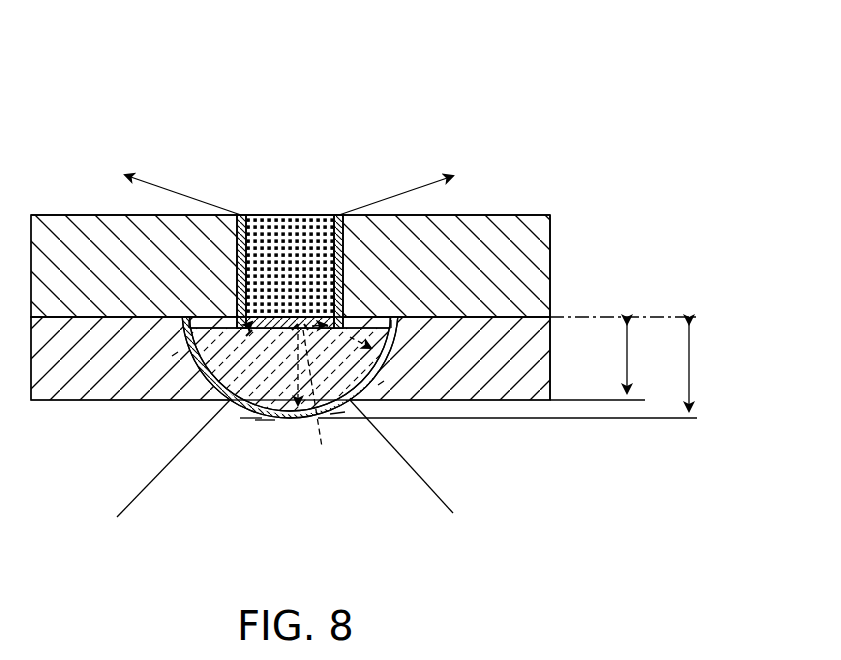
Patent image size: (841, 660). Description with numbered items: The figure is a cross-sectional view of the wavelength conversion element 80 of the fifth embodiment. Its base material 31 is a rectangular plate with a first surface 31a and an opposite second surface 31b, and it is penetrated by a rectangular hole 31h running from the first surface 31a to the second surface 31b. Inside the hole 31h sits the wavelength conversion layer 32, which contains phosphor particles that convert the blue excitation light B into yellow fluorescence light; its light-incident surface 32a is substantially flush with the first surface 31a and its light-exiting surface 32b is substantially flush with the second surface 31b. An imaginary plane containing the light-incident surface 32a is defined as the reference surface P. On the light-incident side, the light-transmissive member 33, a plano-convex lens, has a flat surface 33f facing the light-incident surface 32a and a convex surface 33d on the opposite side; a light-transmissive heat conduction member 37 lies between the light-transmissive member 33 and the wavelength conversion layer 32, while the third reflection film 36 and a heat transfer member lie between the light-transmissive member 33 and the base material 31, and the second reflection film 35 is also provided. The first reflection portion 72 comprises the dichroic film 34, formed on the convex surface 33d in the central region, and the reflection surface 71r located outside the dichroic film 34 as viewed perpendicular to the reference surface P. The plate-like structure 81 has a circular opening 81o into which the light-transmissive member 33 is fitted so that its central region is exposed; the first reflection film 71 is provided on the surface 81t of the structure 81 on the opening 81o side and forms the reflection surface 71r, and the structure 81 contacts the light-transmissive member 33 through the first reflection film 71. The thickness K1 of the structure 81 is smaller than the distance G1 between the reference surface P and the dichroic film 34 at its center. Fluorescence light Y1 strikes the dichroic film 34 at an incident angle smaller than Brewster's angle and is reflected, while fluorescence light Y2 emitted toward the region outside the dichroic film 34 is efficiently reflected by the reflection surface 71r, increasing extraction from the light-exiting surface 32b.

The wavelength conversion element 80 is at (185, 133).
The base material 31 is at (447, 227).
The first surface 31a is at (540, 320).
The second surface 31b is at (513, 215).
The hole 31h is at (330, 203).
The wavelength conversion layer 32 is at (320, 213).
The light-incident surface 32a is at (298, 330).
The light-exiting surface 32b is at (300, 213).
The light-transmissive member 33 is at (251, 412).
The convex surface 33d is at (338, 415).
The flat surface 33f is at (393, 318).
The dichroic film 34 is at (261, 420).
The second reflection film 35 is at (239, 230).
The third reflection film 36 is at (218, 317).
The heat conduction member 37 is at (241, 335).
The first reflection film 71 is at (185, 338).
The reflection surface 71r is at (185, 318).
The first reflection portion 72 is at (110, 400).
The structure 81 is at (513, 370).
The opening 81o is at (360, 305).
The surface 81t is at (170, 357).
The fluorescence light Y1 is at (157, 180).
The fluorescence light Y2 is at (380, 352).
The blue excitation light B is at (130, 500).
The reference surface P is at (606, 317).
The thickness K1 is at (607, 362).
The distance G1 is at (524, 371).